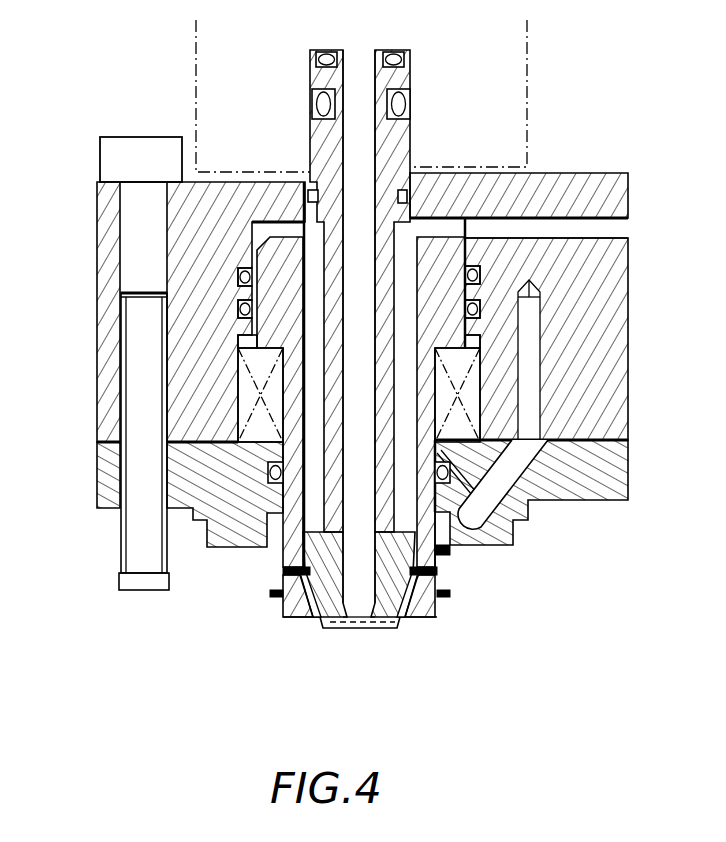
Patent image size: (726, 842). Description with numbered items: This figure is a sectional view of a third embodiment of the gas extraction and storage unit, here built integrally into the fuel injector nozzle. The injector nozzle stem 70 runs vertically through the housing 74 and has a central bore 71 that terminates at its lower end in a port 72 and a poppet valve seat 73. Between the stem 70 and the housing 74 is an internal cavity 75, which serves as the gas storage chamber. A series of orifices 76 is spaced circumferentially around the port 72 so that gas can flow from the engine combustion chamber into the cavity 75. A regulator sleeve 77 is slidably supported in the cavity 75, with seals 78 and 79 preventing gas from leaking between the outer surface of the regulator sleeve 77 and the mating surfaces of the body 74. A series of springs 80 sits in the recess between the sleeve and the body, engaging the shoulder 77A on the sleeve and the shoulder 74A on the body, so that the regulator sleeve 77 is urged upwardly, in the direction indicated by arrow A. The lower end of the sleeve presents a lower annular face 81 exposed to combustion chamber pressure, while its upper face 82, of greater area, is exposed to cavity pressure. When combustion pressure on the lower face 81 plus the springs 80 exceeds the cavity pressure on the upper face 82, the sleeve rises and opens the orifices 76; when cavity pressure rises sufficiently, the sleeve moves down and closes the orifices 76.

The injector nozzle stem 70 is at (316, 137).
The central bore 71 is at (372, 146).
The port 72 is at (366, 620).
The poppet valve seat 73 is at (353, 620).
The housing 74 is at (630, 335).
The shoulder 74A is at (250, 450).
The internal cavity 75 is at (450, 228).
The orifices 76 is at (303, 612).
The regulator sleeve 77 is at (452, 262).
The shoulder 77A is at (240, 340).
The seal 78 is at (236, 277).
The seal 79 is at (236, 318).
The springs 80 is at (243, 398).
The lower annular face 81 is at (278, 577).
The upper face 82 is at (282, 234).
The direction arrow A is at (248, 583).